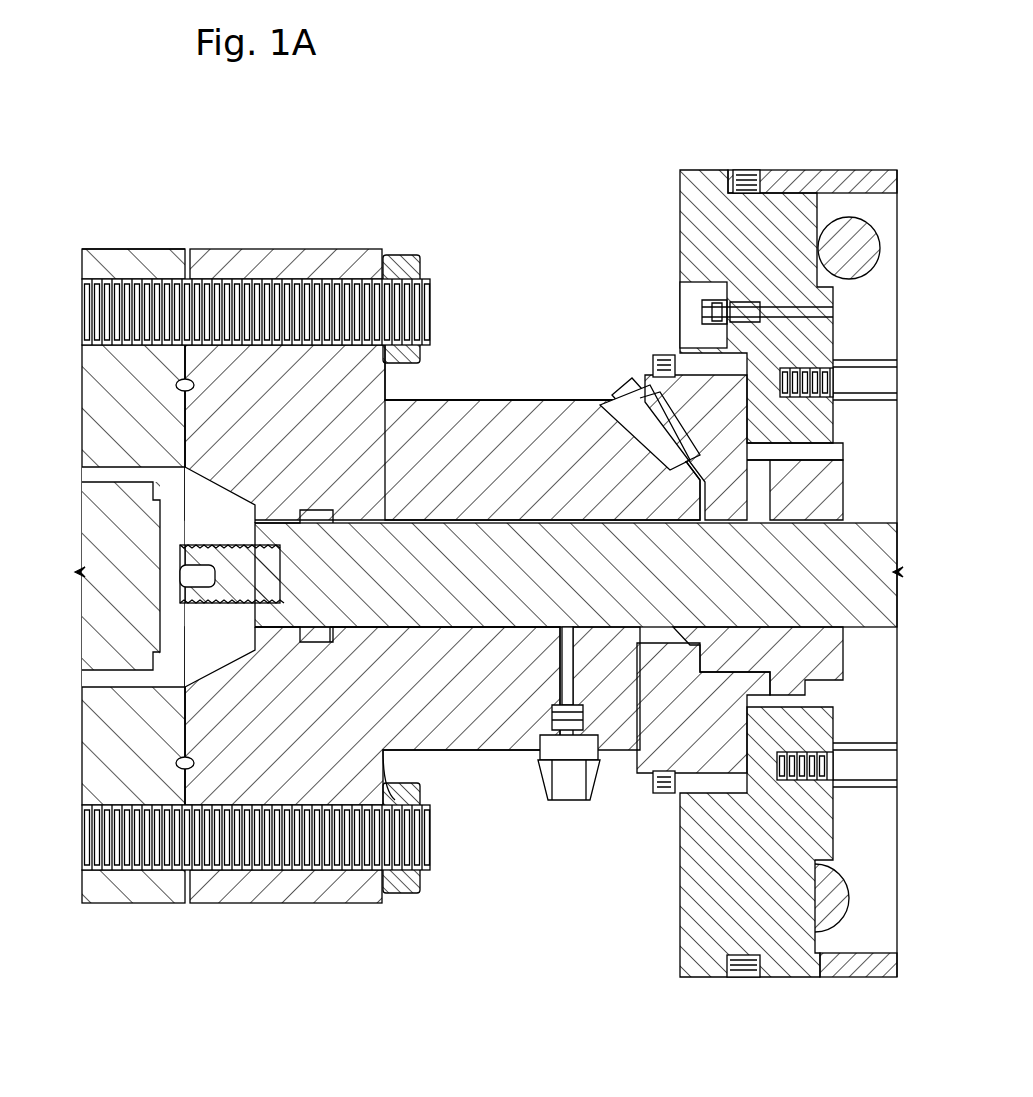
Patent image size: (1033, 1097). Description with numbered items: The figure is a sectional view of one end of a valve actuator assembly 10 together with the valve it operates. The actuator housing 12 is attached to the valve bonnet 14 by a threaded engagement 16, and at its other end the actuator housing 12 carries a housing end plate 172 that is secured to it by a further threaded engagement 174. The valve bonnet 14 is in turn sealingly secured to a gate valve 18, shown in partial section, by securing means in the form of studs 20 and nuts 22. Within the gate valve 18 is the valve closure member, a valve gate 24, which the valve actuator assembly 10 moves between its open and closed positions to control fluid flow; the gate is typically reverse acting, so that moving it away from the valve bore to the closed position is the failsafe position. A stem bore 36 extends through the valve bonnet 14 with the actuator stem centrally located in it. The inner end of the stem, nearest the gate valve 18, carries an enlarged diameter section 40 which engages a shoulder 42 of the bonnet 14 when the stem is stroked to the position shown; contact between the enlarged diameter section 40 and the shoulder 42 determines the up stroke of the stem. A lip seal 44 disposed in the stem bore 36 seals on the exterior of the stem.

The valve actuator assembly 10 is at (530, 167).
The actuator housing 12 is at (820, 172).
The valve bonnet 14 is at (300, 250).
The threaded engagement 16 is at (660, 355).
The gate valve 18 is at (110, 250).
The studs 20 is at (432, 832).
The nuts 22 is at (420, 880).
The valve gate 24 is at (100, 627).
The stem bore 36 is at (512, 627).
The enlarged diameter section 40 is at (190, 685).
The shoulder 42 is at (420, 500).
The lip seal 44 is at (640, 640).
The housing end plate 172 is at (680, 240).
The threaded engagement 174 is at (790, 170).